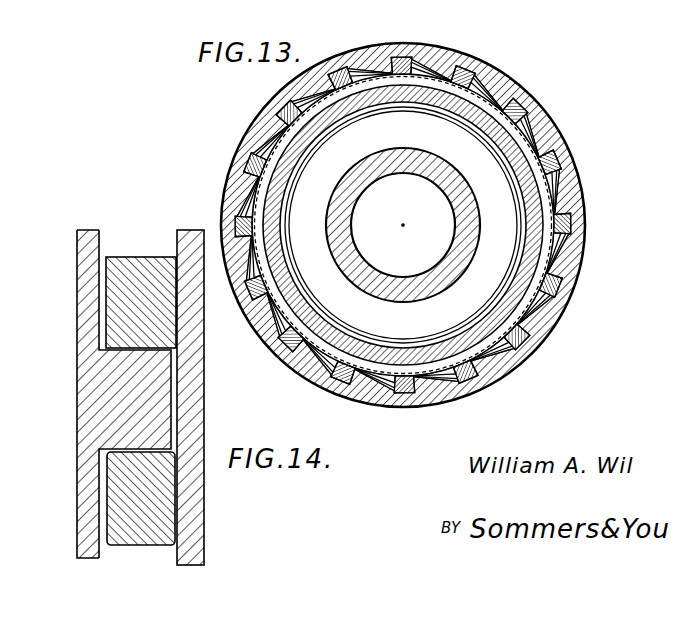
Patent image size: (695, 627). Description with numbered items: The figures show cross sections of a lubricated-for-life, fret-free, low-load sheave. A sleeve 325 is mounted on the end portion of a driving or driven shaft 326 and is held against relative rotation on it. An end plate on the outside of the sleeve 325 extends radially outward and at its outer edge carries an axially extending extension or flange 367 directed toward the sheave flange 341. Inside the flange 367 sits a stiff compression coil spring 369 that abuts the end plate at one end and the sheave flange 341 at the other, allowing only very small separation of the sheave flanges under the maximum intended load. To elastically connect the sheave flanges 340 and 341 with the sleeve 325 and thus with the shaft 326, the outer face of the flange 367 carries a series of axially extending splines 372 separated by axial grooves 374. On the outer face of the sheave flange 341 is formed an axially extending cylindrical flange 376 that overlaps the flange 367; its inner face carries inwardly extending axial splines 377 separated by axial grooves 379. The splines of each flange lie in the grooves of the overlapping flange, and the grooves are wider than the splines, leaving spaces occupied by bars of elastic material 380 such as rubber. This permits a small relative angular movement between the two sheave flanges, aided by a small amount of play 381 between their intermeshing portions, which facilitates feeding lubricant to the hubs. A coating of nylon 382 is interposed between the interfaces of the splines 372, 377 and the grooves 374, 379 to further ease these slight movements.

In FIG. 13, the sleeve 325 is at (420, 214).
In FIG. 13, the shaft 326 is at (444, 212).
In FIG. 13, the flange 367 is at (525, 136).
In FIG. 13, the compression coil spring 369 is at (320, 101).
In FIG. 13, the splines 372 is at (416, 224).
In FIG. 13, the grooves 374 is at (530, 256).
In FIG. 13, the cylindrical flange 376 is at (435, 233).
In FIG. 13, the splines 377 is at (250, 190).
In FIG. 13, the grooves 379 is at (586, 226).
In FIG. 13, the bars of elastic material 380 is at (416, 224).
In FIG. 13, the coating of nylon 382 is at (379, 58).
In FIG. 14, the sheave flange 340 is at (149, 397).
In FIG. 14, the sheave flange 341 is at (90, 340).
In FIG. 14, the play 381 is at (198, 352).